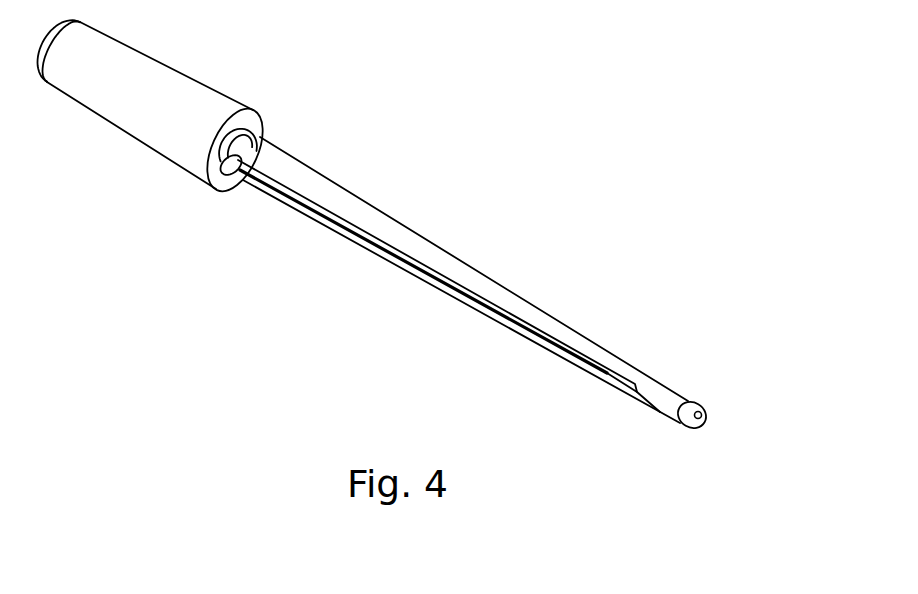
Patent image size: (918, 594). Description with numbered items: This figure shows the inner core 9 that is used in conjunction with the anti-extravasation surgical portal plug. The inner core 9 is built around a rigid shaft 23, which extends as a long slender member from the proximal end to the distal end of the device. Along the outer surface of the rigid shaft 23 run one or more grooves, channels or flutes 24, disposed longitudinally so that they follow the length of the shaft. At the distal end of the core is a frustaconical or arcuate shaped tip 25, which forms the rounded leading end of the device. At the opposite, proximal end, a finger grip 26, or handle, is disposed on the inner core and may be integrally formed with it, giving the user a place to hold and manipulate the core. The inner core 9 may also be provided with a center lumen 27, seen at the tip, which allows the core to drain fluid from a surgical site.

The inner core 9 is at (503, 112).
The finger grip 26 is at (133, 123).
The rigid shaft 23 is at (553, 327).
The grooves, channels or flutes 24 is at (608, 372).
The tip 25 is at (736, 413).
The center lumen 27 is at (698, 422).